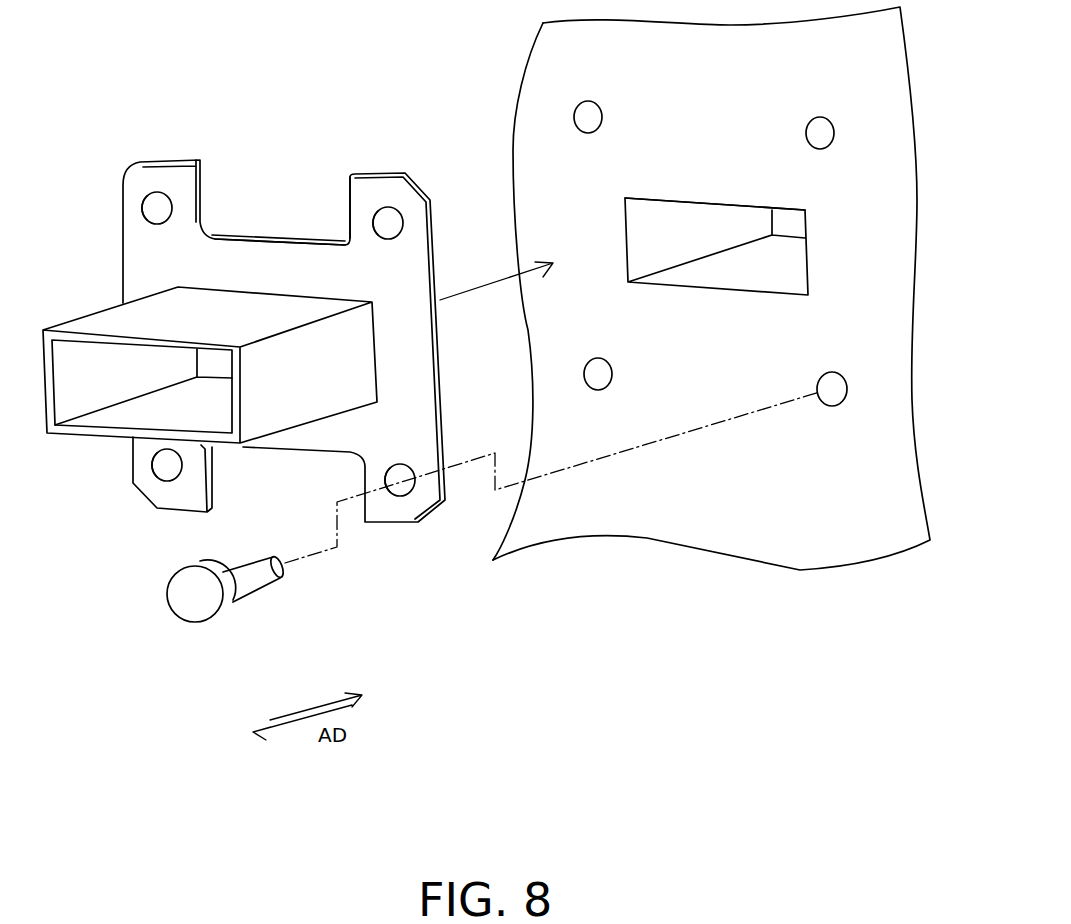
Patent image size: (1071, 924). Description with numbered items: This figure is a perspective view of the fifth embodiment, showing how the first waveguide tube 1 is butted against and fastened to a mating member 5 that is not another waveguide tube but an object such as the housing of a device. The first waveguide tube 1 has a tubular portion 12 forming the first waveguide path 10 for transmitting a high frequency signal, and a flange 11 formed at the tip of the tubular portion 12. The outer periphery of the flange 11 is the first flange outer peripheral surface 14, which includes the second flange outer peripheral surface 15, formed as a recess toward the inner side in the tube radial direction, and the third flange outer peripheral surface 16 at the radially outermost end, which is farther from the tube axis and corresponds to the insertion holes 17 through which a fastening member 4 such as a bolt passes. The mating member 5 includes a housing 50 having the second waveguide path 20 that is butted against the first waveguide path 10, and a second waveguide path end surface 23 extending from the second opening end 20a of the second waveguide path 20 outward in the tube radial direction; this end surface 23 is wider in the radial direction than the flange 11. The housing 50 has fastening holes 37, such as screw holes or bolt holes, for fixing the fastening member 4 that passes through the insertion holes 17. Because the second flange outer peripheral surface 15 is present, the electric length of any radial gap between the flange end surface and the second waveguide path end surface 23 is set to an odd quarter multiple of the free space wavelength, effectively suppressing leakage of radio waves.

The first waveguide tube 1 is at (148, 127).
The fastening member 4 is at (182, 600).
The mating member 5 is at (756, 579).
The first waveguide path 10 is at (118, 422).
The flange 11 is at (130, 244).
The tubular portion 12 is at (80, 325).
The first flange outer peripheral surface 14 is at (365, 115).
The second flange outer peripheral surface 15 is at (272, 235).
The third flange outer peripheral surface 16 is at (375, 172).
The insertion hole 17 is at (147, 198).
The second waveguide path 20 is at (680, 227).
The second opening end 20a is at (745, 203).
The second waveguide path end surface 23 is at (547, 163).
The fastening hole 37 is at (590, 104).
The housing 50 is at (648, 527).